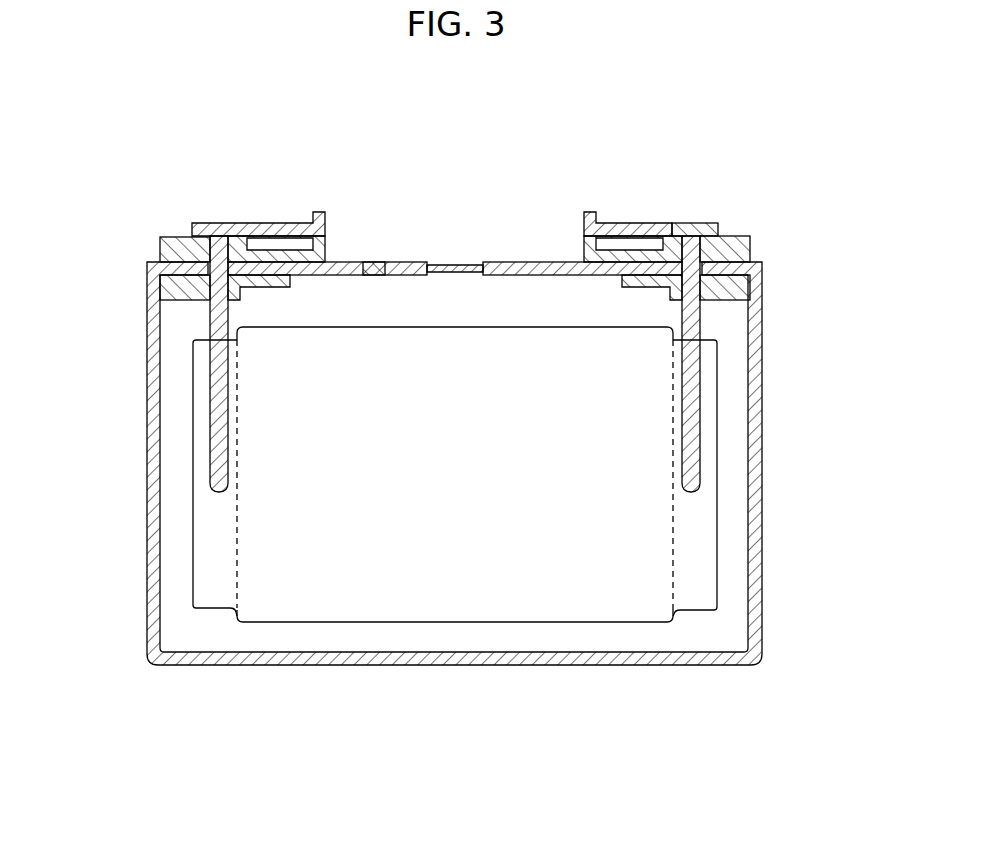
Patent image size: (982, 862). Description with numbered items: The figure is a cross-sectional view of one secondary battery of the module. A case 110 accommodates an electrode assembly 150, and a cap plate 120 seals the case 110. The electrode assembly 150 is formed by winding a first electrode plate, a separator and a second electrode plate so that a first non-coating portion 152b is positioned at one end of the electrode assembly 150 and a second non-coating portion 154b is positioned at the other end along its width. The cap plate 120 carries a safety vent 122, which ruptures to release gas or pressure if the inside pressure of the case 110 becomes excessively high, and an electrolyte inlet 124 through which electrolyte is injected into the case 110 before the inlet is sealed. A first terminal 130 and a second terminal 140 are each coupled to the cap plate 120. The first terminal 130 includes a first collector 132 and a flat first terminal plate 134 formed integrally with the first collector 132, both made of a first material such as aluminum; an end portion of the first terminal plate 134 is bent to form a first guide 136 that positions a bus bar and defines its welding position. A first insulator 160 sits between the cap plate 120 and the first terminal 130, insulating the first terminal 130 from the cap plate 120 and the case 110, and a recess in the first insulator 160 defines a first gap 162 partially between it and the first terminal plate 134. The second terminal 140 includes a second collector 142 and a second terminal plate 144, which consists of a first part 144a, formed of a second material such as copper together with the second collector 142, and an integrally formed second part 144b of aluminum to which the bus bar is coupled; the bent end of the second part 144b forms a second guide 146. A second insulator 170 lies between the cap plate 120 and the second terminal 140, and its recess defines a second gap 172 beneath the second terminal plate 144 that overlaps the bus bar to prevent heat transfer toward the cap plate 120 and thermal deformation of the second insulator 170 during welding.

The case 110 is at (148, 573).
The cap plate 120 is at (535, 262).
The safety vent 122 is at (456, 258).
The electrolyte inlet 124 is at (373, 254).
The first terminal 130 is at (72, 227).
The first collector 132 is at (210, 322).
The first terminal plate 134 is at (192, 232).
The first guide 136 is at (320, 212).
The second terminal 140 is at (843, 185).
The second collector 142 is at (700, 322).
The second terminal plate 144 is at (788, 172).
The first part 144a is at (717, 232).
The second part 144b is at (667, 222).
The second guide 146 is at (592, 212).
The electrode assembly 150 is at (455, 598).
The first non-coating portion 152b is at (215, 597).
The second non-coating portion 154b is at (692, 597).
The first insulator 160 is at (290, 283).
The first gap 162 is at (283, 242).
The second insulator 170 is at (622, 283).
The second gap 172 is at (632, 242).